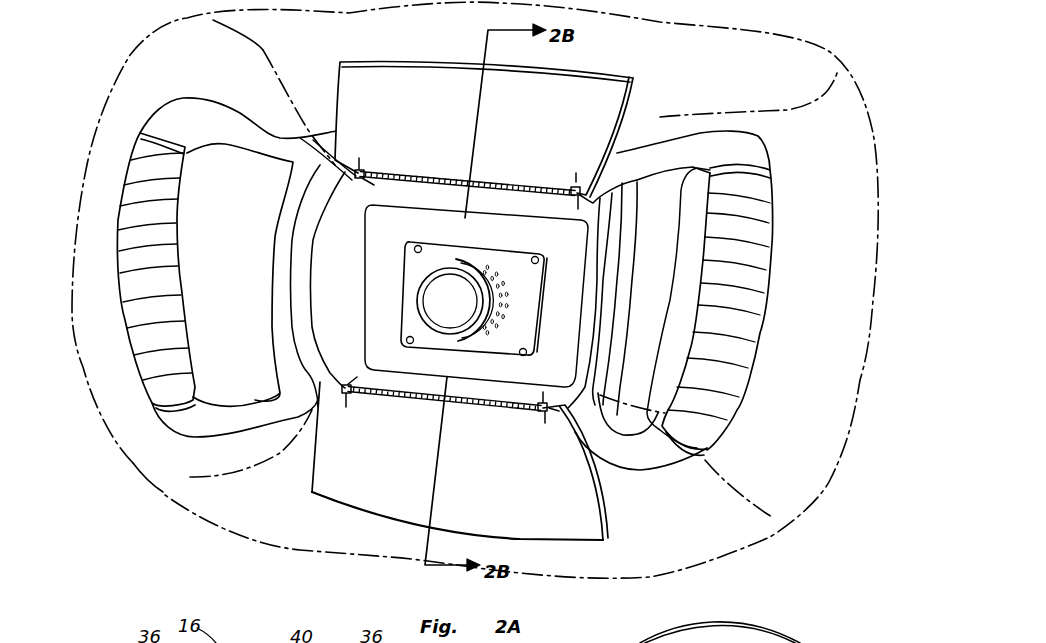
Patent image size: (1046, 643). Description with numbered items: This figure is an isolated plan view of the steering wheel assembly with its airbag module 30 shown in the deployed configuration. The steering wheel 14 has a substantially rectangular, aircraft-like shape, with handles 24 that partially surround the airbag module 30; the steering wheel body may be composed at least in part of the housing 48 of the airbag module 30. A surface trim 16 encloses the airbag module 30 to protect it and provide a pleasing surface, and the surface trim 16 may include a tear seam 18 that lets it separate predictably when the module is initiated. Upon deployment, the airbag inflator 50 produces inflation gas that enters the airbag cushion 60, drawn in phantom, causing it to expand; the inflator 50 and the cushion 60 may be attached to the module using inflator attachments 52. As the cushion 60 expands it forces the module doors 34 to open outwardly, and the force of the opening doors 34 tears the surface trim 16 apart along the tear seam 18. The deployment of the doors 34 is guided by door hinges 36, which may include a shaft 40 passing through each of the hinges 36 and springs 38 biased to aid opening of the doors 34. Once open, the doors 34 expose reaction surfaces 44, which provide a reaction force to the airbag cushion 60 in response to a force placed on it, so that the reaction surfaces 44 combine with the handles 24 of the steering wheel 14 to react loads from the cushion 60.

The steering wheel 14 is at (227, 113).
The surface trim 16 is at (637, 91).
The tear seam 18 is at (637, 68).
The handles 24 is at (157, 260).
The airbag module 30 is at (674, 111).
The module doors 34 is at (567, 93).
The door hinges 36 is at (535, 187).
The springs 38 is at (348, 178).
The shaft 40 is at (658, 208).
The reaction surfaces 44 is at (472, 301).
The housing 48 is at (313, 140).
The airbag inflator 50 is at (445, 293).
The inflator attachments 52 is at (523, 356).
The airbag cushion 60 is at (158, 494).